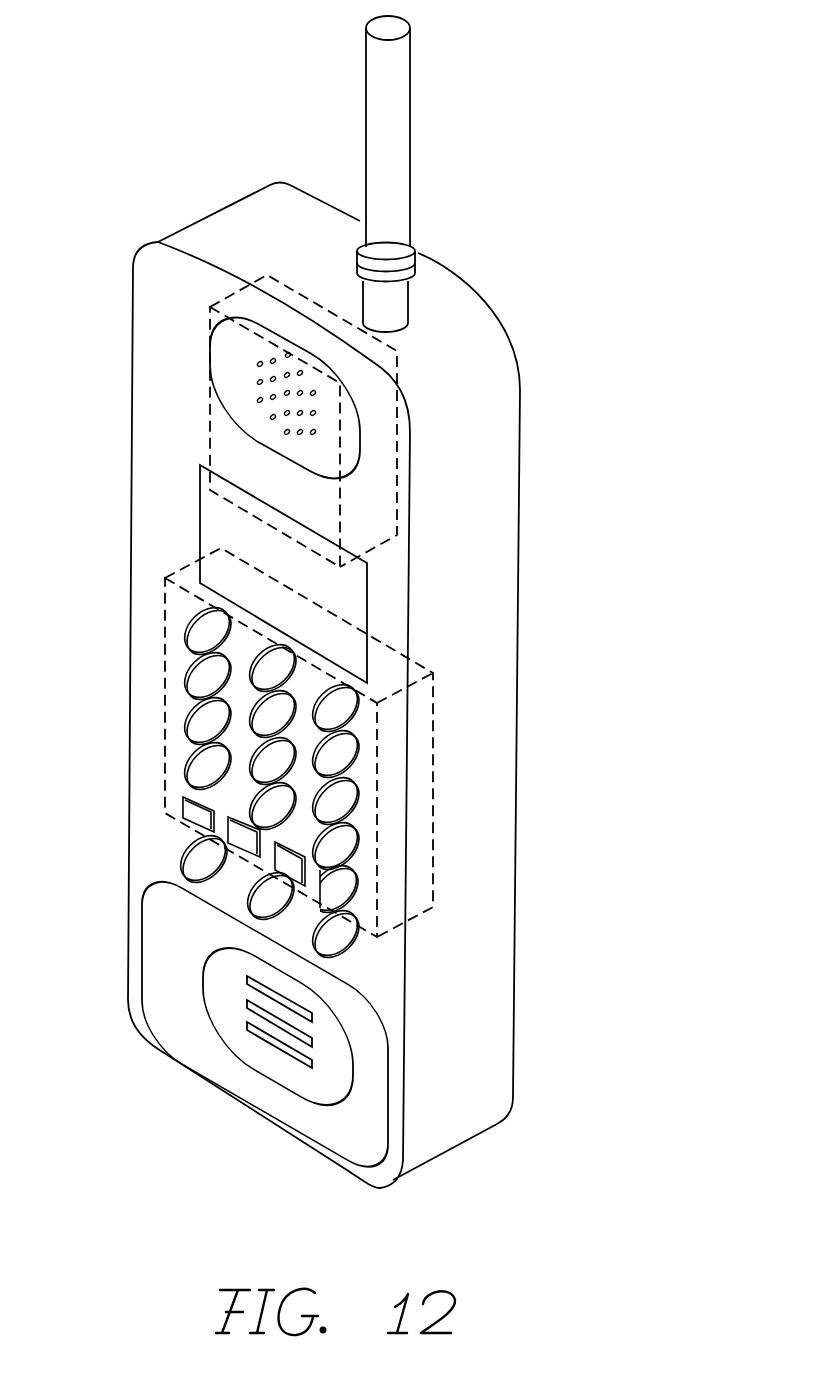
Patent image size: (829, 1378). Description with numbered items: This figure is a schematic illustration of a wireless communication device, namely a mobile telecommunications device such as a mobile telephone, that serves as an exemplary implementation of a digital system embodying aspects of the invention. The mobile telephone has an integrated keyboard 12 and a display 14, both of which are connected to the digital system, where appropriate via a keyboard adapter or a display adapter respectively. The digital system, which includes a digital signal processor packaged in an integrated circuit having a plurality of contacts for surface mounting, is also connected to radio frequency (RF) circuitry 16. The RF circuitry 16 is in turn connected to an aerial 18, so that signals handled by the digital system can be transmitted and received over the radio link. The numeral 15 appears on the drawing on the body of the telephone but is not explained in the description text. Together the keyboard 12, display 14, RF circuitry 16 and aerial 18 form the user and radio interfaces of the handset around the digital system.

The aerial 18 is at (393, 122).
The radio frequency (RF) circuitry 16 is at (228, 438).
The display 14 is at (218, 527).
The keyboard 12 is at (198, 719).
The housing 15 is at (490, 967).